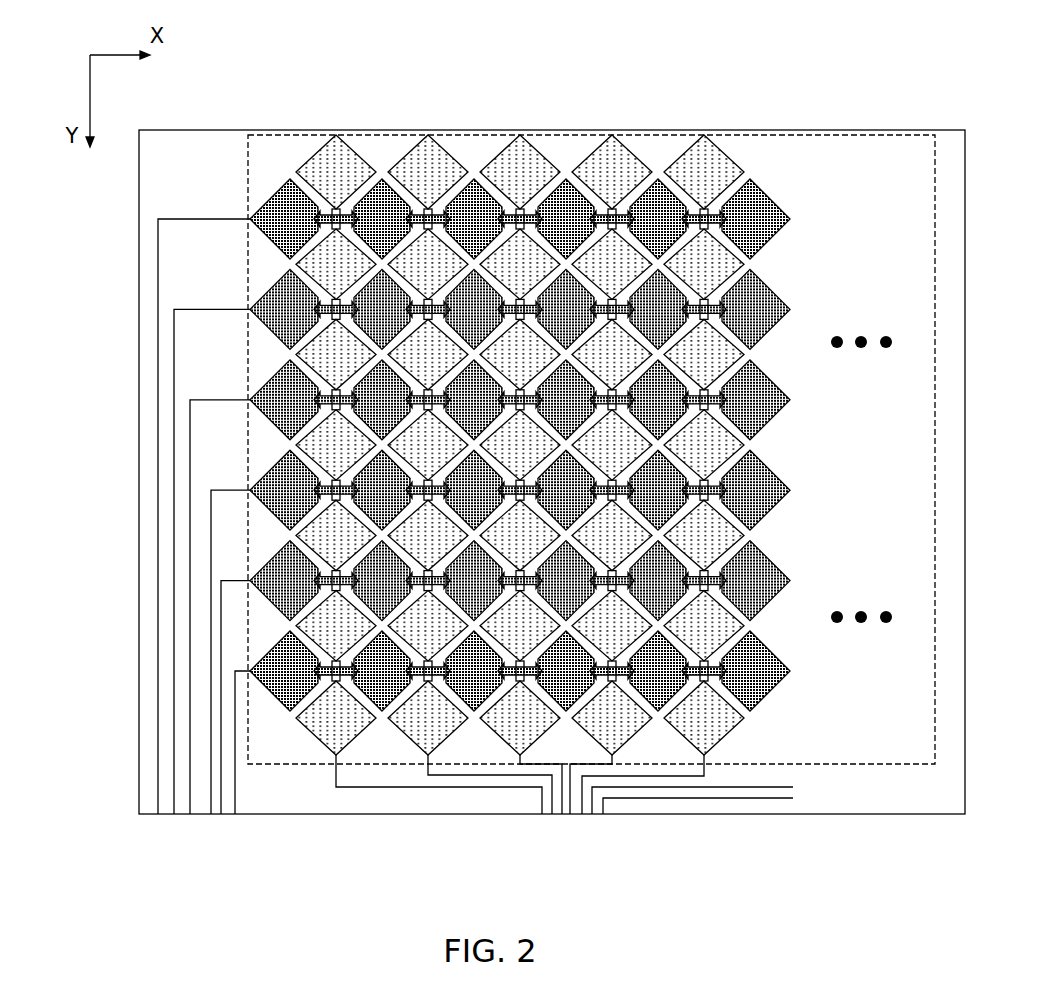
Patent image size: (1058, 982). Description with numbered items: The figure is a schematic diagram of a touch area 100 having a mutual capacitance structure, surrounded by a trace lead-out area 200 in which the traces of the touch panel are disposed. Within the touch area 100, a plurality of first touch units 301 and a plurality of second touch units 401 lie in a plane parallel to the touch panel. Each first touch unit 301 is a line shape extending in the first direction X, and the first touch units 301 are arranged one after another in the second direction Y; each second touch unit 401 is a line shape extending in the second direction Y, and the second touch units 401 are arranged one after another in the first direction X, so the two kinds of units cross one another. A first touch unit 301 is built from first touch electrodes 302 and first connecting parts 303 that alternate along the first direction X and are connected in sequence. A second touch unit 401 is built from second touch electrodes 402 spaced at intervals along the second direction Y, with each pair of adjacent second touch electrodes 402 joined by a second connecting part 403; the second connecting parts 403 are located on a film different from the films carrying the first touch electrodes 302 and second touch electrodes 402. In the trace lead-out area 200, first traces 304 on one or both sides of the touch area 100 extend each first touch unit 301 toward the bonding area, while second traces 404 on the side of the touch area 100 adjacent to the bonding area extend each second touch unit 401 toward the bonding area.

The touch area 100 is at (800, 147).
The trace lead-out area 200 is at (183, 148).
The first touch unit 301 is at (570, 165).
The first touch electrode 302 is at (565, 182).
The first connecting part 303 is at (608, 210).
The first trace 304 is at (158, 393).
The second touch unit 401 is at (378, 117).
The second touch electrode 402 is at (433, 160).
The second connecting part 403 is at (693, 212).
The second trace 404 is at (650, 797).